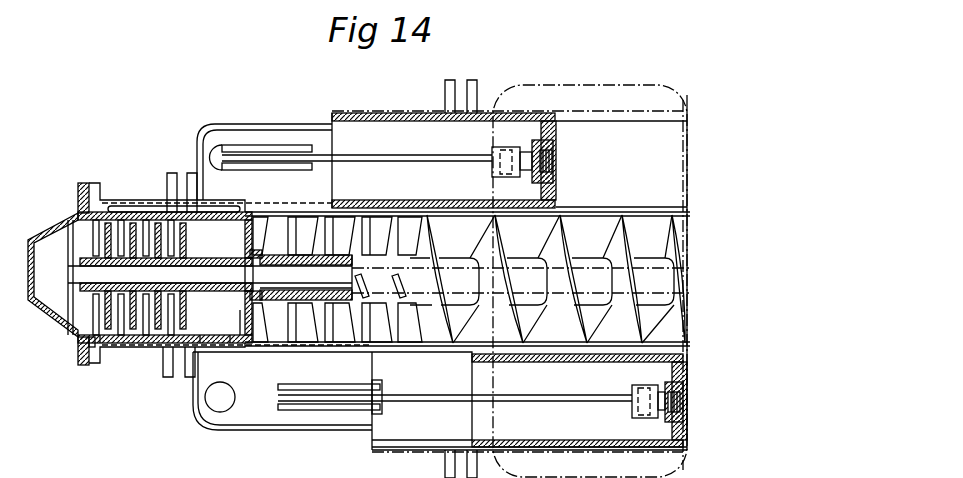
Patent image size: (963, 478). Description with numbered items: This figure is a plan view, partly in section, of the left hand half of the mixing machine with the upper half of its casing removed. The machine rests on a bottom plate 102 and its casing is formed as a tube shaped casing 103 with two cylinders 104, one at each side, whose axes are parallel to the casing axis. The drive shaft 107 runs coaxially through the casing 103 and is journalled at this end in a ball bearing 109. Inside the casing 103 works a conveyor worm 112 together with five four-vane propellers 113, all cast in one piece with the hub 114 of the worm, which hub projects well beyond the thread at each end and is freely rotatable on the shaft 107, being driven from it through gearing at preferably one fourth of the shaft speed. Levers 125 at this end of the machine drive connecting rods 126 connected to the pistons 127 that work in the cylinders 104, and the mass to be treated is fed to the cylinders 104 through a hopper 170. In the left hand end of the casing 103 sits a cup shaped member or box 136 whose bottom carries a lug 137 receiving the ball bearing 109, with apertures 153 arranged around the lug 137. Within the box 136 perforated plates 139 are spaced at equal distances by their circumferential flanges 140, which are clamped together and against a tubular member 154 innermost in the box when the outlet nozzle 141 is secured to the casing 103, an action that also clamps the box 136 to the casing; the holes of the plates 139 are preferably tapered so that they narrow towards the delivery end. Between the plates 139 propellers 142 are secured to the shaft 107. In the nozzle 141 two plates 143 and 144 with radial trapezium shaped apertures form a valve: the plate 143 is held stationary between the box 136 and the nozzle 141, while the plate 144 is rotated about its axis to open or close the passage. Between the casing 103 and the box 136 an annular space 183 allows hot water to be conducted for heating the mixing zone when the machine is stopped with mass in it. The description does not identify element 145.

The bottom plate 102 is at (282, 391).
The tube shaped casing 103 is at (547, 279).
The cylinders 104 is at (509, 279).
The drive shaft 107 is at (379, 279).
The ball bearing 109 is at (306, 277).
The conveyor worm 112 is at (418, 300).
The four-vane propellers 113 is at (358, 235).
The hub 114 is at (552, 305).
The levers 125 is at (272, 168).
The connecting rods 126 is at (457, 160).
The pistons 127 is at (556, 280).
The cup shaped member or box 136 is at (101, 200).
The lug 137 is at (247, 253).
The perforated plates 139 is at (117, 342).
The circumferential flanges 140 is at (135, 343).
The outlet nozzle 141 is at (72, 213).
The propellers 142 is at (135, 226).
The plate 143 is at (85, 250).
The plate 144 is at (78, 258).
The ring 145 is at (78, 315).
The apertures 153 is at (245, 315).
The tubular member 154 is at (220, 218).
The hopper 170 is at (633, 86).
The annular space 183 is at (155, 207).